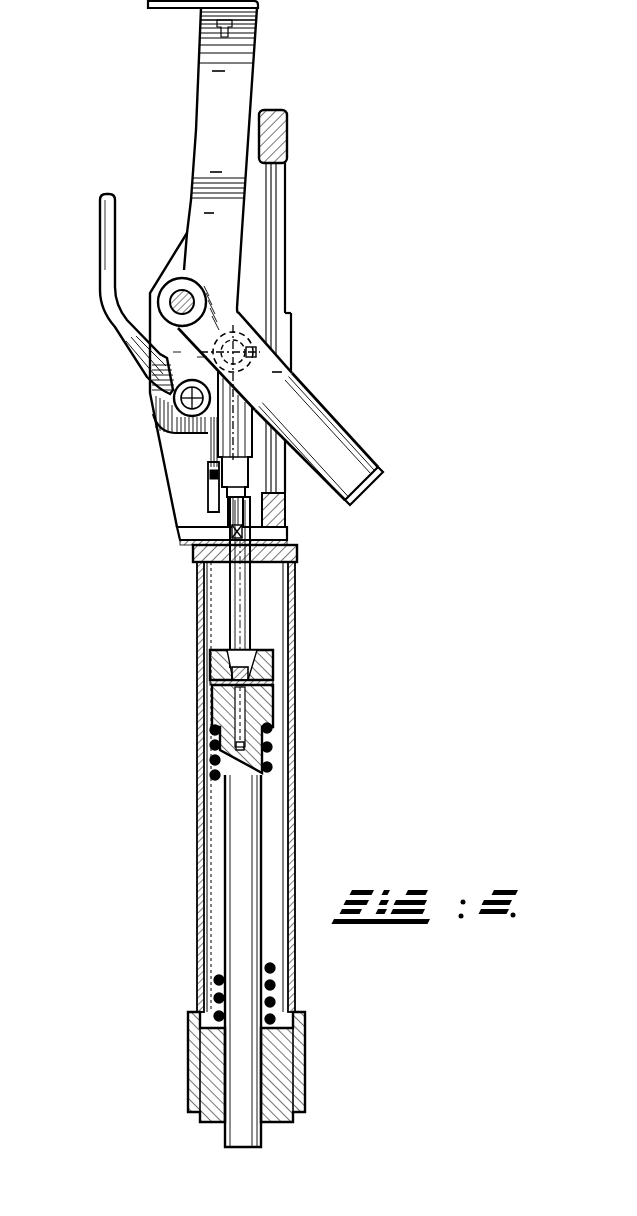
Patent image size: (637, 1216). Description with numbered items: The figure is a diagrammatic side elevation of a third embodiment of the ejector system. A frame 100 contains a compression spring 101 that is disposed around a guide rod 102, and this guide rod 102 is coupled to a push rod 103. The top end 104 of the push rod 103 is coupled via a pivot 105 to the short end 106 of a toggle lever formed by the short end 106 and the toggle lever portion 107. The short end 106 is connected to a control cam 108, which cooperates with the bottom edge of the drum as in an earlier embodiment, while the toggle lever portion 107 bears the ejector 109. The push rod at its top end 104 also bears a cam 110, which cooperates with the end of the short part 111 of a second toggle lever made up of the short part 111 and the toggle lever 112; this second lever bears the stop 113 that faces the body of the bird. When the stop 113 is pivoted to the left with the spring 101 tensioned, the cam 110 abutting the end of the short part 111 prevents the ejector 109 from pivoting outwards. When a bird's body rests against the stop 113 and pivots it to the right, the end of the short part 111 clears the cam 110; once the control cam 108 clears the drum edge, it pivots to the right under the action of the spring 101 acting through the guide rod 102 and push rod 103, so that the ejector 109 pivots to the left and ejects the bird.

The frame 100 is at (316, 567).
The compression spring 101 is at (270, 750).
The guide rod 102 is at (253, 837).
The push rod 103 is at (245, 618).
The top end of push rod 104 is at (225, 435).
The pivot 105 is at (250, 352).
The short end of toggle lever 106 is at (272, 373).
The toggle lever portion 107 is at (210, 147).
The control cam 108 is at (337, 437).
The ejector 109 is at (173, 7).
The cam 110 is at (203, 483).
The short part of toggle lever 111 is at (203, 450).
The toggle lever 112 is at (140, 380).
The stop 113 is at (100, 225).